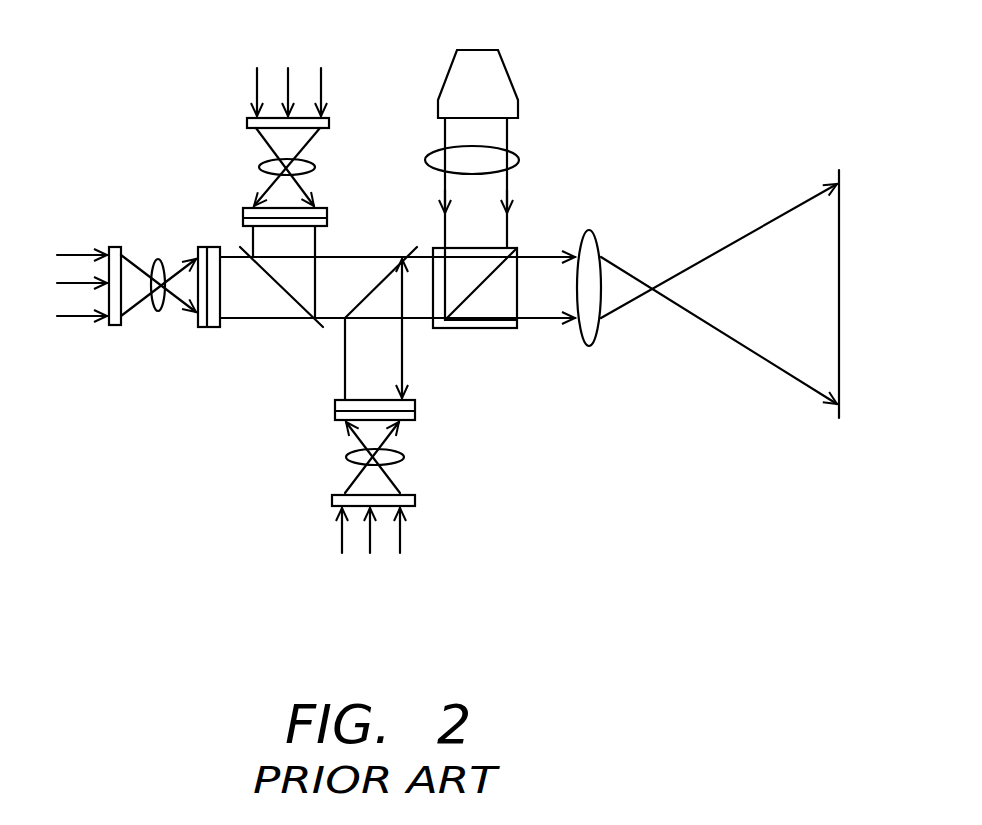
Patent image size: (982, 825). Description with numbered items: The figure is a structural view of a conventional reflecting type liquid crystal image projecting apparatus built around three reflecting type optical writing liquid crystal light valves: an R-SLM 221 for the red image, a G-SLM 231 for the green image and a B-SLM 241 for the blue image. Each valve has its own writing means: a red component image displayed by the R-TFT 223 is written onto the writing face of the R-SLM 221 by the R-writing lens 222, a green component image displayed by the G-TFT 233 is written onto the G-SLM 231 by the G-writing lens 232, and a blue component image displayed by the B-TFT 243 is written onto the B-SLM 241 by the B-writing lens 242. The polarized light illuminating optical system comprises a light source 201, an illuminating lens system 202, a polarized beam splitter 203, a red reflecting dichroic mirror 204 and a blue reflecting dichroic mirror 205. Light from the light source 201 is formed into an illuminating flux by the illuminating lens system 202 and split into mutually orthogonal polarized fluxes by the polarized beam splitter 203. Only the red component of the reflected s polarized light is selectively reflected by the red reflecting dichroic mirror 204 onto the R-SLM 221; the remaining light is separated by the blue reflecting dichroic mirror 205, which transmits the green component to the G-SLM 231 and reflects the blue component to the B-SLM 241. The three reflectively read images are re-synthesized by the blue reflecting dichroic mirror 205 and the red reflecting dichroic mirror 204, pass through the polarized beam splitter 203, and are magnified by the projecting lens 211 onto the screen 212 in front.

The light source 201 is at (483, 60).
The illuminating lens system 202 is at (520, 163).
The polarized beam splitter 203 is at (493, 328).
The red reflecting dichroic mirror 204 is at (337, 327).
The blue reflecting dichroic mirror 205 is at (323, 325).
The projecting lens 211 is at (600, 258).
The screen 212 is at (843, 195).
The reflecting type optical writing liquid crystal light valve (R-SLM) 221 is at (415, 411).
The R-writing lens 222 is at (405, 457).
The R-TFT liquid crystal panel 223 is at (415, 500).
The reflecting type optical writing liquid crystal light valve (G-SLM) 231 is at (207, 245).
The G-writing lens 232 is at (158, 312).
The G-TFT liquid crystal panel 233 is at (112, 325).
The reflecting type optical writing liquid crystal light valve (B-SLM) 241 is at (243, 215).
The B-writing lens 242 is at (315, 160).
The B-TFT liquid crystal panel 243 is at (247, 122).